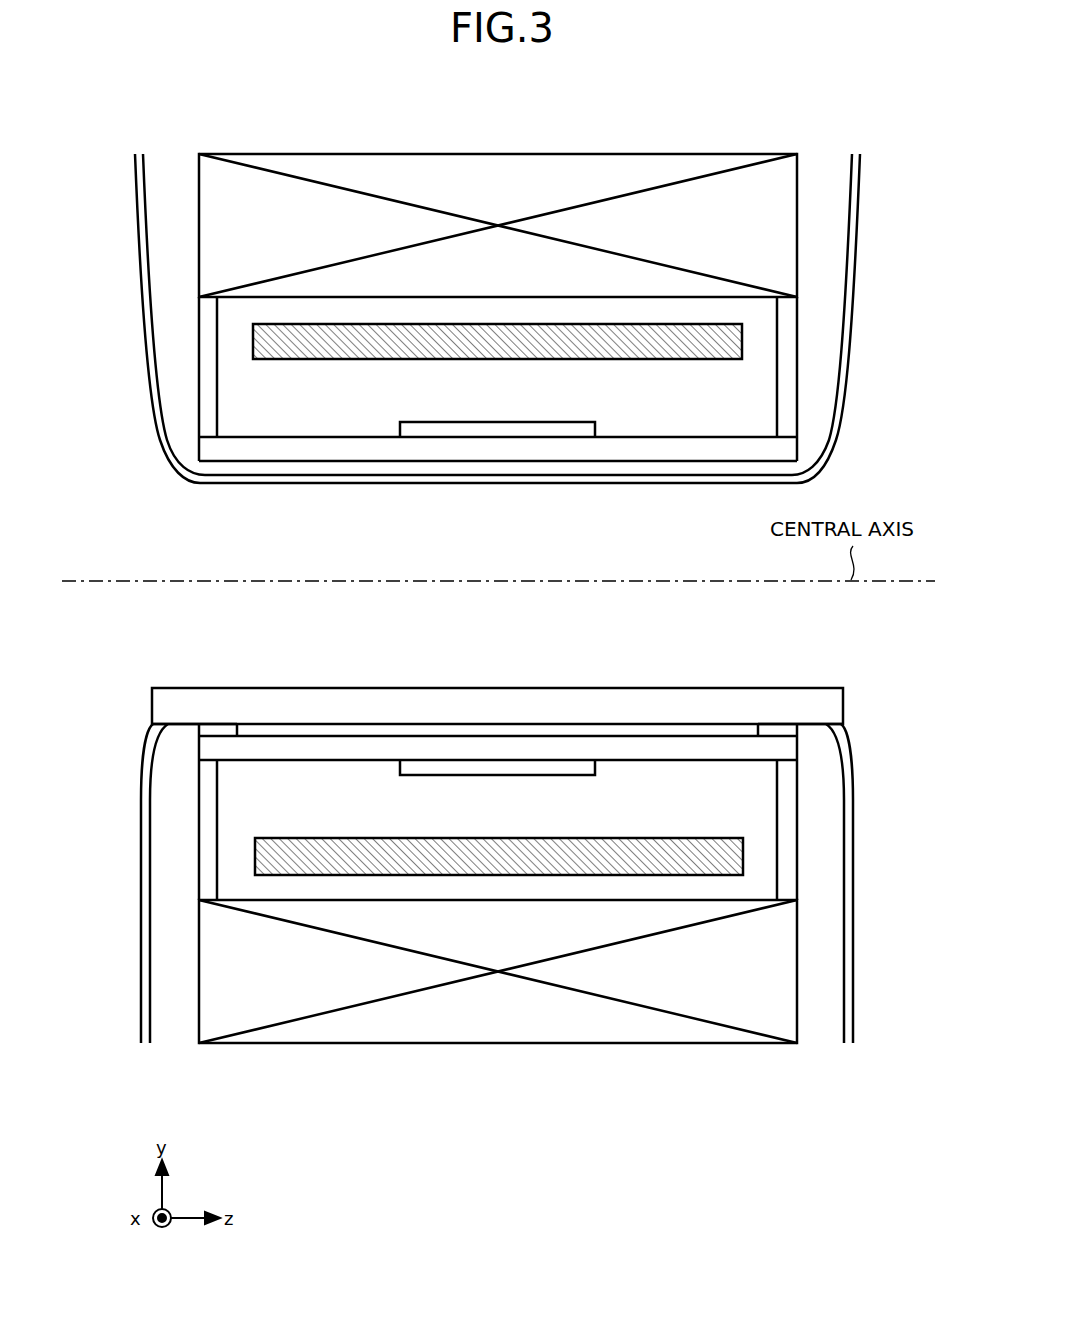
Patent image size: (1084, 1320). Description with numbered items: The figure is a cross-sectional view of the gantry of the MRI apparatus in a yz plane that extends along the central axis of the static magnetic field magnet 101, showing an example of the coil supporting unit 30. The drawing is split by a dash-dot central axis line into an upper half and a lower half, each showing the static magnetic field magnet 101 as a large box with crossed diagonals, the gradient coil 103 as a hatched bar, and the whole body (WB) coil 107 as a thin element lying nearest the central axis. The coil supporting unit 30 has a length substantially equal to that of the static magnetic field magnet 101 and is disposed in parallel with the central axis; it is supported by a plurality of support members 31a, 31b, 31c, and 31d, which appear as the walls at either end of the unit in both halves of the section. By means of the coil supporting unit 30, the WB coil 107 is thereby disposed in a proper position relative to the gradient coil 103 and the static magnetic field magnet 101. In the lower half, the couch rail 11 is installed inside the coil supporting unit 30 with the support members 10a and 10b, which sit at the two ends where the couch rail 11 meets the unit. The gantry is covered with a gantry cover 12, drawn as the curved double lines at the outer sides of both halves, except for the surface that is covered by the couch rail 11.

The static magnetic field magnet 101 is at (636, 153).
The gantry cover 12 is at (855, 262).
The support member 31c is at (199, 343).
The support member 31d is at (797, 318).
The support member 31a is at (199, 852).
The support member 31b is at (797, 838).
The coil supporting unit 30 is at (726, 462).
The couch rail 11 is at (620, 688).
The support member 10a is at (199, 730).
The support member 10b is at (797, 730).
The gradient coil 103 is at (742, 344).
The whole body (WB) coil 107 is at (595, 423).